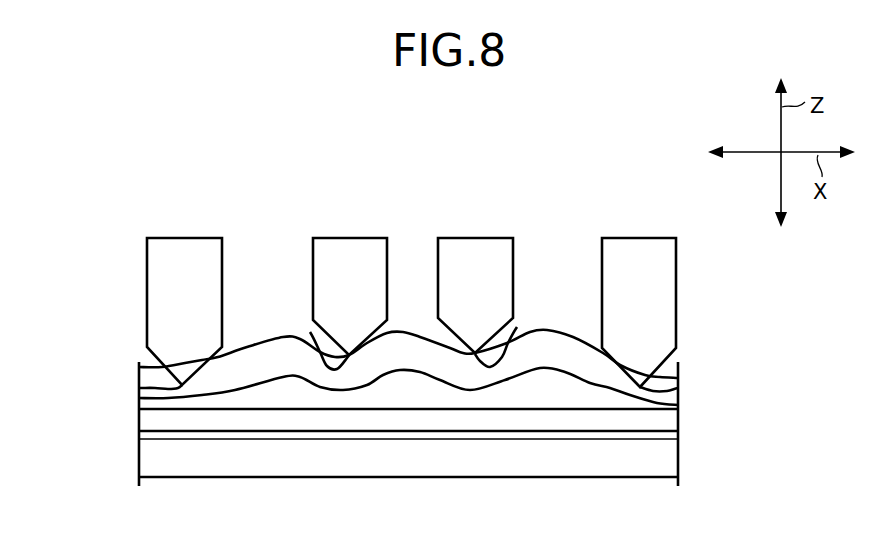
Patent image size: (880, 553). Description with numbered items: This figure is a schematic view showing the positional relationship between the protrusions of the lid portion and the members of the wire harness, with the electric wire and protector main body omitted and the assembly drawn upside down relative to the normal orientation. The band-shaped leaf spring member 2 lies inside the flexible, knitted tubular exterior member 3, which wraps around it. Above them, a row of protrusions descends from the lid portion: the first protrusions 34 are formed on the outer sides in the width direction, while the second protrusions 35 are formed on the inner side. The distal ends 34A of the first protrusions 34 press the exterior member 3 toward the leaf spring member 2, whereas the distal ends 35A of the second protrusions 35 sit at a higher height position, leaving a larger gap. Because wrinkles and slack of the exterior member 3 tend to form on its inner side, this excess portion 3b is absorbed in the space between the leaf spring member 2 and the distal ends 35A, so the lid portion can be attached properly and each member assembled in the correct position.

The leaf spring member 2 is at (668, 420).
The exterior member 3 is at (150, 377).
The excess portion 3b is at (402, 332).
The first protrusion 34 is at (157, 270).
The distal end of first protrusion 34A is at (139, 388).
The second protrusion 35 is at (348, 252).
The distal end of second protrusion 35A is at (517, 327).